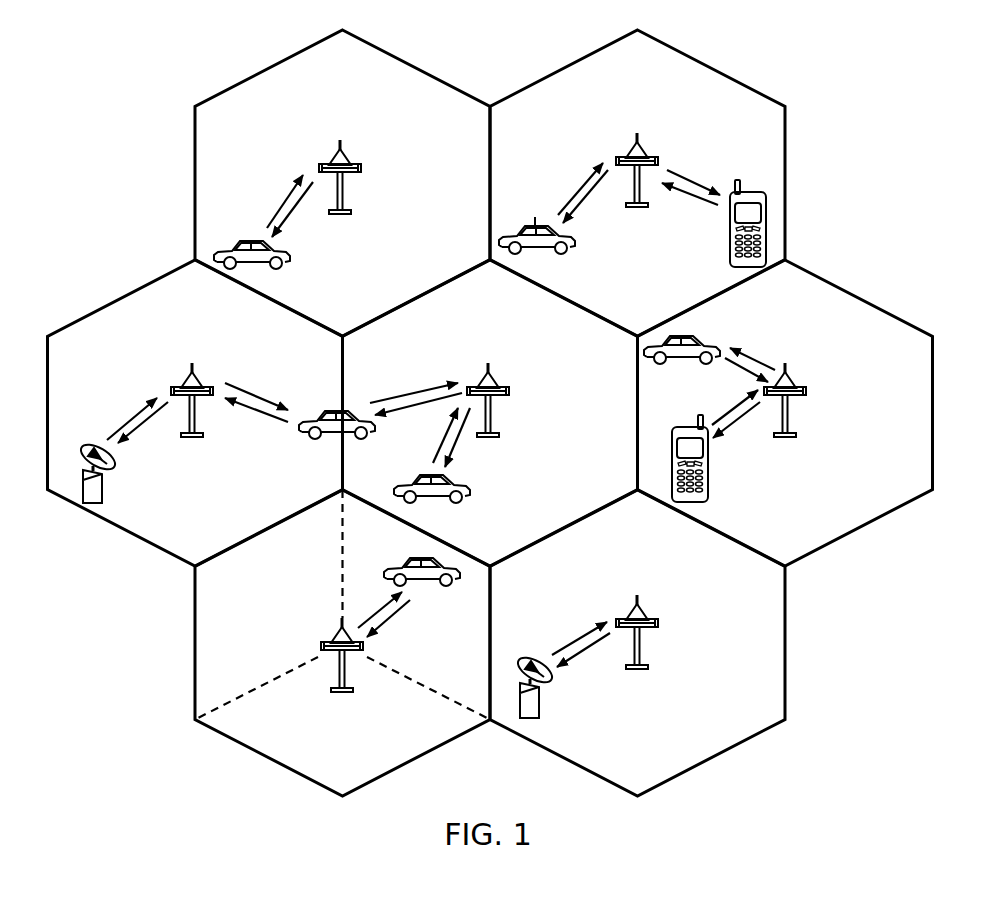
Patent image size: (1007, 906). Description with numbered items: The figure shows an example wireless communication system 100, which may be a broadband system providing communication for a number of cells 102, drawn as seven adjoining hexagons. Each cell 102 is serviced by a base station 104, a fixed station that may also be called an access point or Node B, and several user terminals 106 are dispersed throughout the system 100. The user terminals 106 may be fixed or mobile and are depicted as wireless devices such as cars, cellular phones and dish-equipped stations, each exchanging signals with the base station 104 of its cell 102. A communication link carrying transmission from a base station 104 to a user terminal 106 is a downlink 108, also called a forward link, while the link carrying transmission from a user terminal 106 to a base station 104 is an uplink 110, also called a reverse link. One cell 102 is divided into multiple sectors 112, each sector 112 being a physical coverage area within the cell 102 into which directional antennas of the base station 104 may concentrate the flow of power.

The wireless communication system 100 is at (920, 109).
The cell 102 is at (278, 60).
The base station 104 is at (340, 141).
The user terminal 106 is at (291, 263).
The downlink 108 is at (290, 222).
The uplink 110 is at (284, 200).
The sector 112 is at (396, 752).